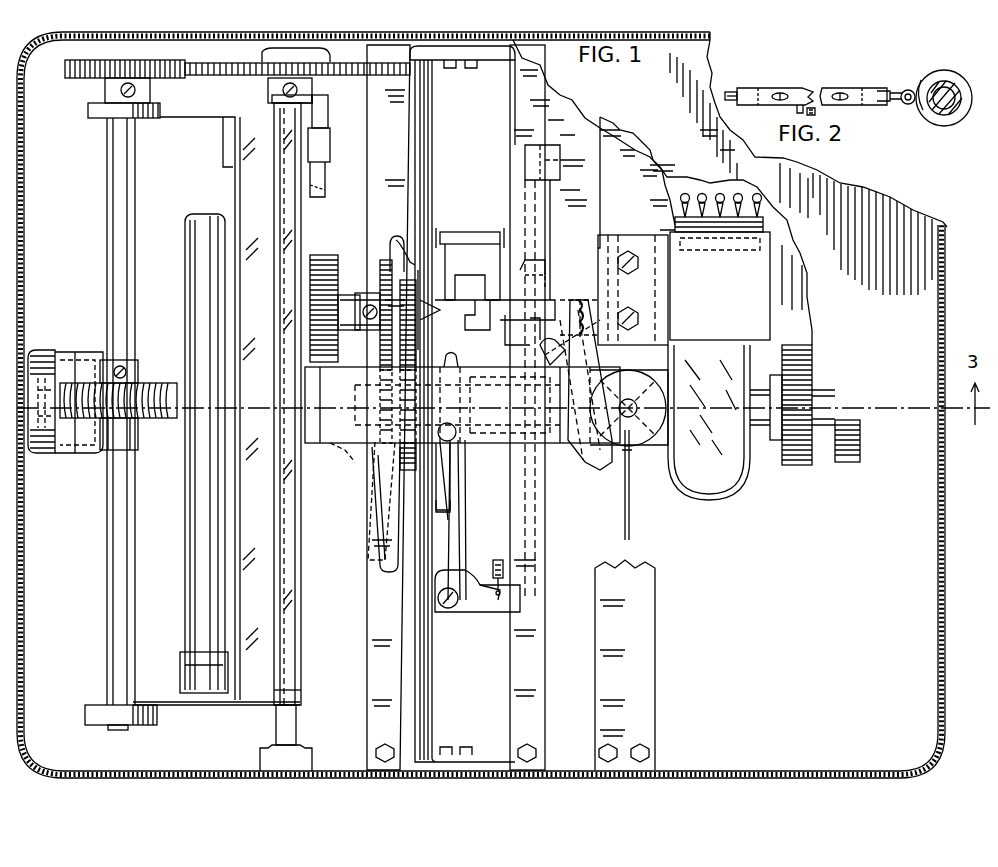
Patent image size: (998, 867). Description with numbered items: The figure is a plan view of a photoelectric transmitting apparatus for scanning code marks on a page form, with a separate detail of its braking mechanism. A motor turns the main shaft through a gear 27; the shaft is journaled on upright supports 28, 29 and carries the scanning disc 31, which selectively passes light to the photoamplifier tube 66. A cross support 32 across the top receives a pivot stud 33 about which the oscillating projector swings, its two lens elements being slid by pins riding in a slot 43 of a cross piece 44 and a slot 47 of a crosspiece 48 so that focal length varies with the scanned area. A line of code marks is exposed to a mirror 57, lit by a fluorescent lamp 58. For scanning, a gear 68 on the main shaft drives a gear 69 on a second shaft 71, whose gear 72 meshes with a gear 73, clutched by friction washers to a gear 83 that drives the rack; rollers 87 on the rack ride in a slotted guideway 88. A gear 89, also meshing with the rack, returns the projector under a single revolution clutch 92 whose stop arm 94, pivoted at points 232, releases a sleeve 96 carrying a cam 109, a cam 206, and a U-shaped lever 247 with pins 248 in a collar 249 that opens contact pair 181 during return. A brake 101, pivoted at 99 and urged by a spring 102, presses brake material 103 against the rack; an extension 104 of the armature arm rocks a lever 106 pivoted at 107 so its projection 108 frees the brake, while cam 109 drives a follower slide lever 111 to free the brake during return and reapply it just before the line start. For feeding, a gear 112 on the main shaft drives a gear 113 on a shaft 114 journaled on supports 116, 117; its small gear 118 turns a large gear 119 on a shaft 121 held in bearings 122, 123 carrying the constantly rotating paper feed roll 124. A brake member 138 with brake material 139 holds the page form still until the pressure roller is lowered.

In FIG. 1, the gear 27 is at (808, 370).
In FIG. 1, the upright support 28 is at (50, 350).
In FIG. 1, the upright support 29 is at (860, 455).
In FIG. 1, the scanning disc 31 is at (632, 500).
In FIG. 1, the cross support 32 is at (660, 200).
In FIG. 1, the pivot stud 33 is at (636, 400).
In FIG. 1, the slot 43 is at (372, 548).
In FIG. 1, the cross piece 44 is at (368, 612).
In FIG. 1, the slot 47 is at (560, 460).
In FIG. 1, the crosspiece 48 is at (532, 630).
In FIG. 1, the mirror 57 is at (265, 530).
In FIG. 1, the fluorescent lamp 58 is at (215, 283).
In FIG. 1, the photoamplifier tube 66 is at (745, 480).
In FIG. 1, the gear 68 is at (380, 443).
In FIG. 1, the gear 69 is at (400, 352).
In FIG. 1, the second shaft 71 is at (344, 300).
In FIG. 2, the second shaft 71 is at (942, 110).
In FIG. 1, the gear 72 is at (380, 272).
In FIG. 1, the gear 73 is at (398, 464).
In FIG. 1, the gear 83 is at (378, 496).
In FIG. 1, the rollers 87 is at (470, 232).
In FIG. 1, the slotted guideway 88 is at (428, 702).
In FIG. 1, the gear 89 is at (395, 240).
In FIG. 1, the single revolution clutch 92 is at (530, 285).
In FIG. 1, the stop arm 94 is at (525, 255).
In FIG. 2, the sleeve 96 is at (955, 84).
In FIG. 1, the pivot 99 is at (452, 610).
In FIG. 1, the brake 101 is at (466, 546).
In FIG. 2, the brake 101 is at (730, 88).
In FIG. 1, the spring 102 is at (503, 570).
In FIG. 1, the brake material 103 is at (355, 413).
In FIG. 1, the extension 104 is at (380, 372).
In FIG. 1, the lever 106 is at (455, 476).
In FIG. 1, the pivot 107 is at (450, 445).
In FIG. 1, the projection 108 is at (455, 500).
In FIG. 1, the cam 109 is at (548, 285).
In FIG. 2, the cam 109 is at (932, 72).
In FIG. 1, the follower slide lever 111 is at (540, 519).
In FIG. 2, the follower slide lever 111 is at (798, 88).
In FIG. 1, the gear 112 is at (100, 453).
In FIG. 1, the gear 113 is at (155, 418).
In FIG. 1, the shaft 114 is at (108, 207).
In FIG. 1, the support 116 is at (95, 118).
In FIG. 1, the support 117 is at (95, 705).
In FIG. 1, the small gear 118 is at (120, 60).
In FIG. 1, the large gear 119 is at (193, 63).
In FIG. 1, the shaft 121 is at (276, 722).
In FIG. 1, the bearing 122 is at (262, 58).
In FIG. 1, the bearing 123 is at (260, 757).
In FIG. 1, the paper feed roll 124 is at (295, 694).
In FIG. 1, the brake member 138 is at (318, 197).
In FIG. 1, the brake material 139 is at (325, 148).
In FIG. 1, the contact pair 181 is at (540, 258).
In FIG. 1, the cam 206 is at (548, 290).
In FIG. 1, the pivot points 232 is at (500, 232).
In FIG. 1, the U-shaped lever 247 is at (565, 345).
In FIG. 1, the pins 248 is at (458, 362).
In FIG. 1, the collar 249 is at (470, 300).